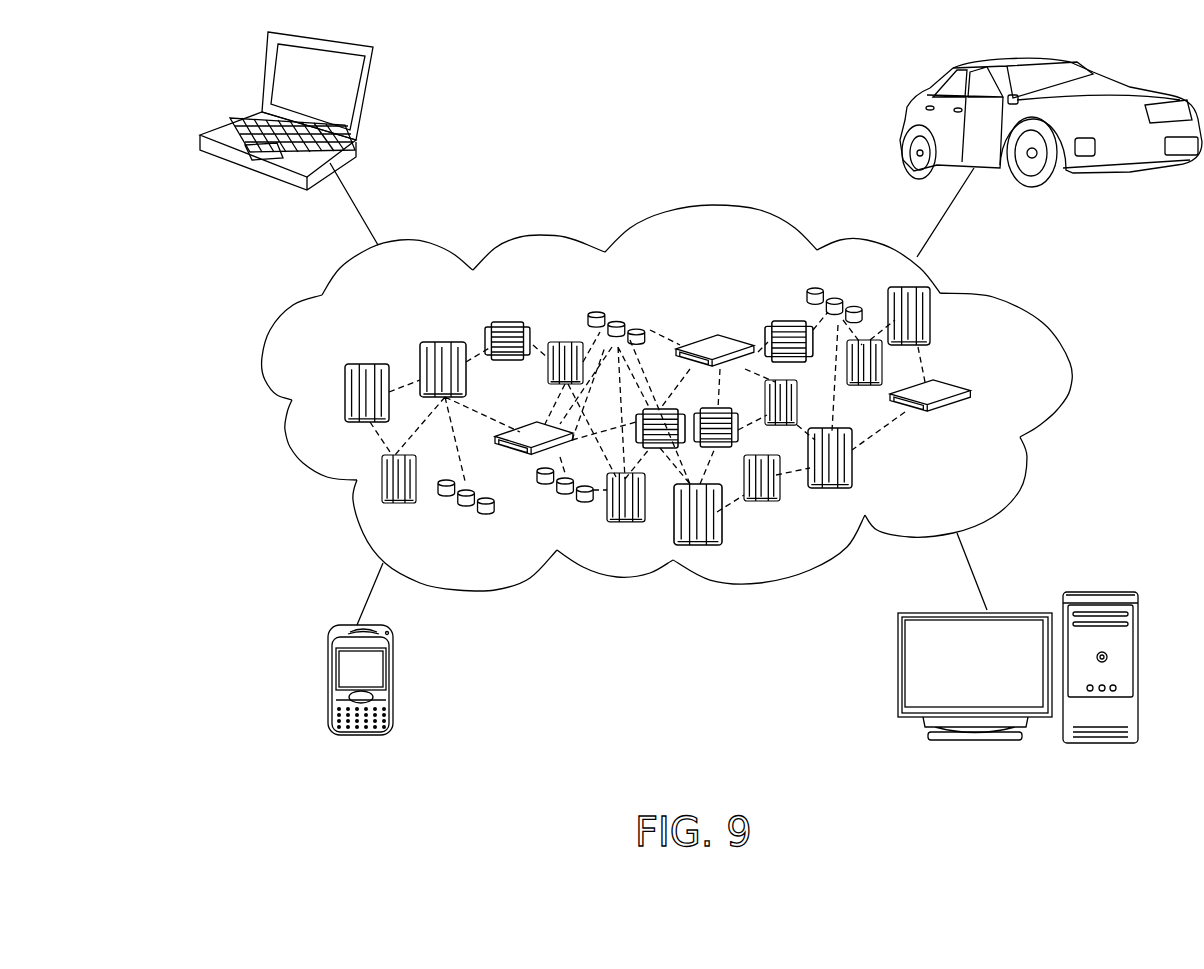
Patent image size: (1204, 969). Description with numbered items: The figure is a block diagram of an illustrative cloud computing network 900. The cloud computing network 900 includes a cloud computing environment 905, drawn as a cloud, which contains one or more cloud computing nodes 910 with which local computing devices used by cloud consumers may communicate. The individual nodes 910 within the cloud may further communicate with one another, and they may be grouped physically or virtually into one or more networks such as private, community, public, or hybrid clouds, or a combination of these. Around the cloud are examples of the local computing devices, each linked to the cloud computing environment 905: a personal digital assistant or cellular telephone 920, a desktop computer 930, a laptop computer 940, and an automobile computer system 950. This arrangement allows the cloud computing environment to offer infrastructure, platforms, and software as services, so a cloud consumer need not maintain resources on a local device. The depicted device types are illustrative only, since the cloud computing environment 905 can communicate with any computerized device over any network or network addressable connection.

The cloud computing network 900 is at (235, 708).
The cloud computing environment 905 is at (283, 432).
The cloud computing nodes 910 is at (300, 336).
The personal digital assistant or cellular telephone 920 is at (326, 660).
The desktop computer 930 is at (898, 660).
The laptop computer 940 is at (258, 106).
The automobile computer system 950 is at (905, 108).